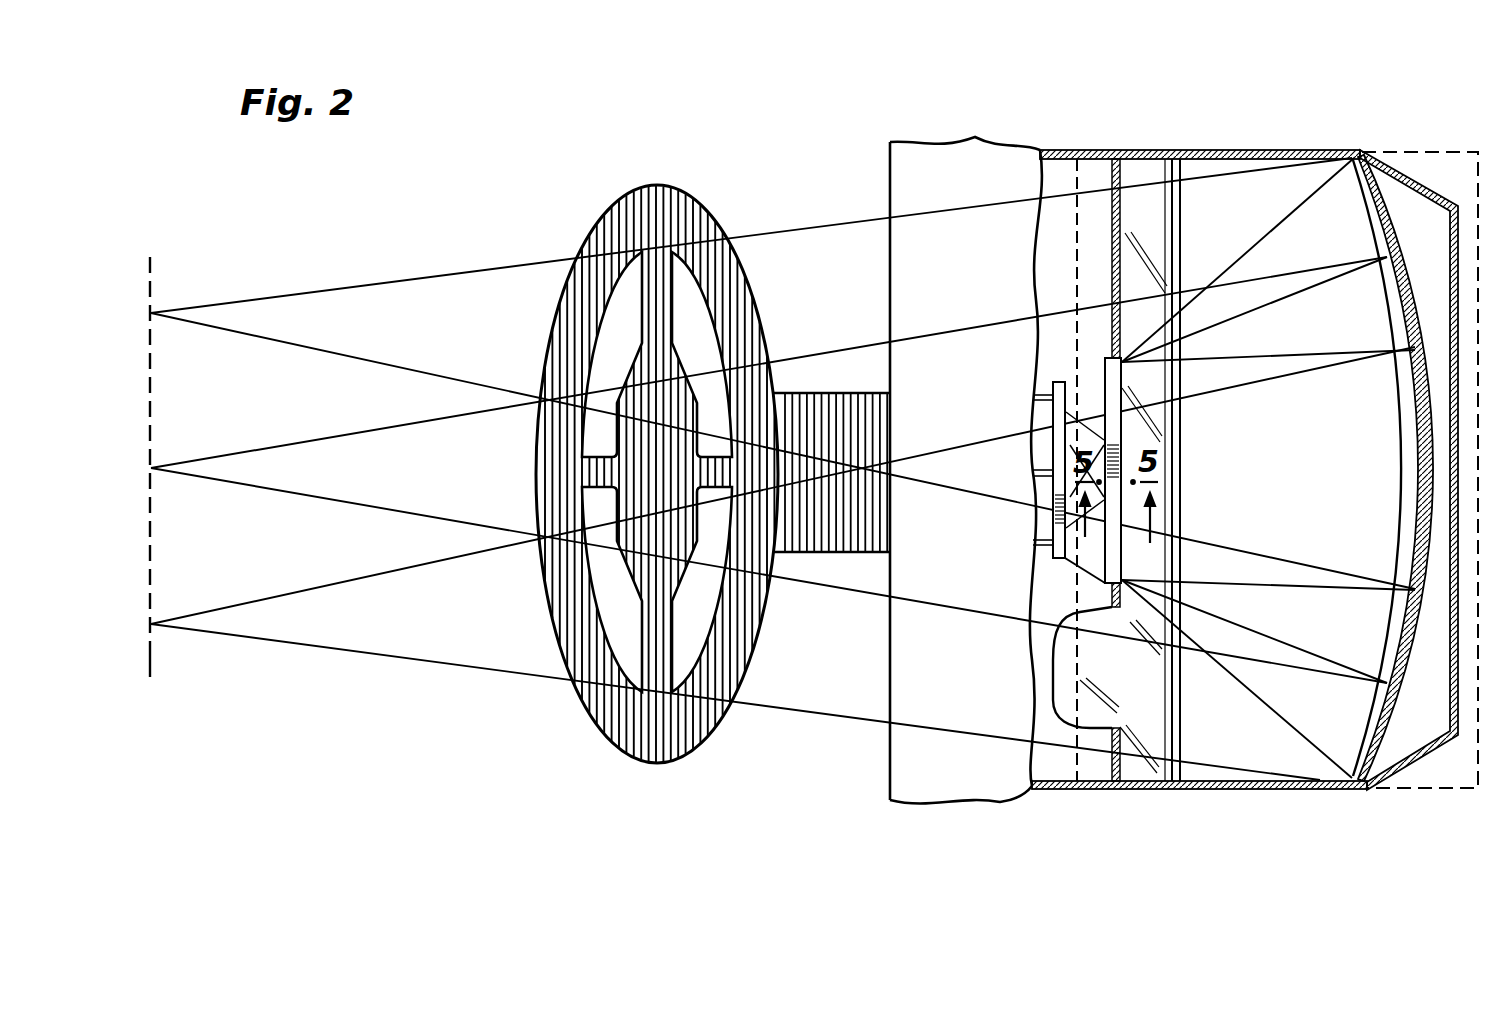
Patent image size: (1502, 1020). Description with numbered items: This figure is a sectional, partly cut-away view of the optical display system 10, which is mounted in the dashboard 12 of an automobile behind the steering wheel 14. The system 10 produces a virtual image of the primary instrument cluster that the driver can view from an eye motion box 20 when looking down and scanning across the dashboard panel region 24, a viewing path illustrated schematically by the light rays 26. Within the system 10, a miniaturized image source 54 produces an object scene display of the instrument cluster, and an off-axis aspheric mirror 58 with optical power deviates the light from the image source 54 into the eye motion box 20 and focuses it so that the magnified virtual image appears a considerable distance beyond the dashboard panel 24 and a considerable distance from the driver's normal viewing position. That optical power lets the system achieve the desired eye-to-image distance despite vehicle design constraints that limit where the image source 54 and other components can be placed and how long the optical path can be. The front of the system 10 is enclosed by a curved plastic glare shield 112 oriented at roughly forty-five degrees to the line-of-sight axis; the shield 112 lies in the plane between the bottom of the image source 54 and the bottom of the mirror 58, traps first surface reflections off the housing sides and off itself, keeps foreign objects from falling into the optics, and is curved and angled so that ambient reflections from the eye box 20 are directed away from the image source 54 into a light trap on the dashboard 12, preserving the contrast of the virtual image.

The optical display system 10 is at (1230, 735).
The dashboard 12 is at (1240, 152).
The steering wheel 14 is at (622, 720).
The eye motion box 20 is at (150, 650).
The dashboard panel region 24 is at (1185, 227).
The light rays 26 is at (395, 654).
The image source 54 is at (1070, 370).
The off-axis aspheric mirror 58 is at (1388, 210).
The glare shield 112 is at (1117, 667).